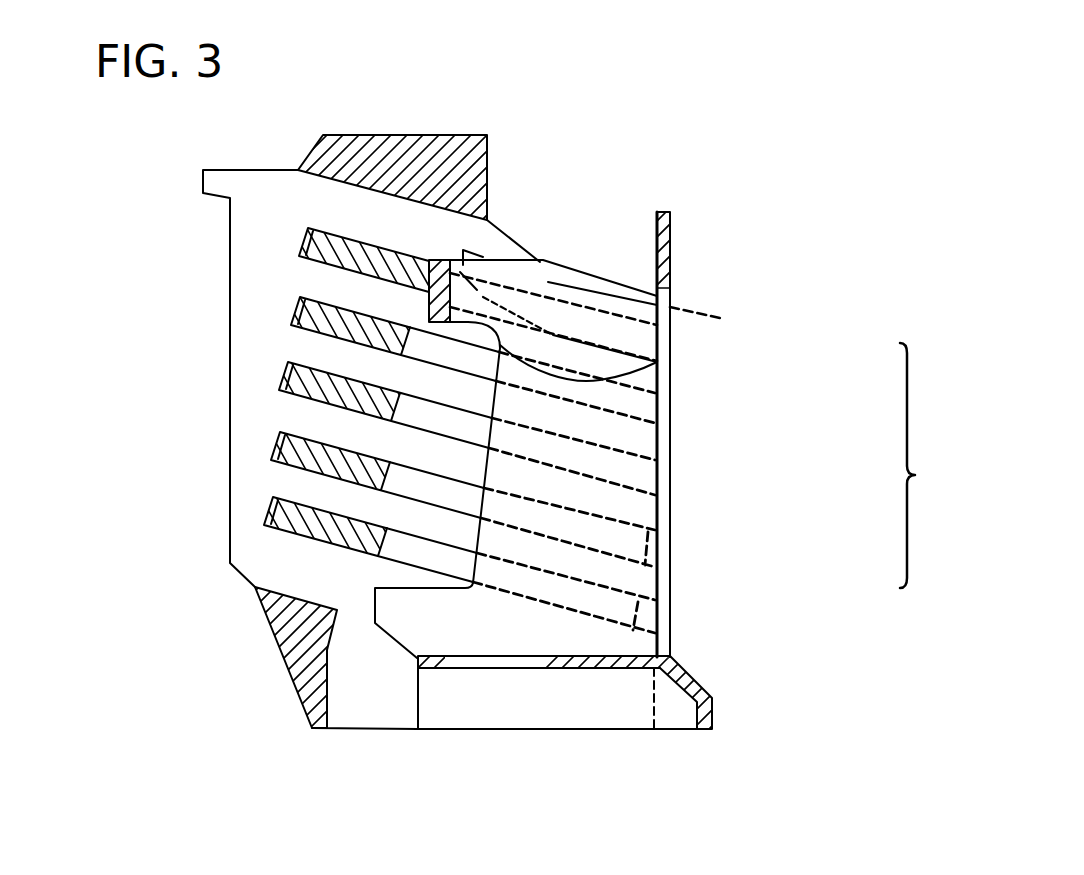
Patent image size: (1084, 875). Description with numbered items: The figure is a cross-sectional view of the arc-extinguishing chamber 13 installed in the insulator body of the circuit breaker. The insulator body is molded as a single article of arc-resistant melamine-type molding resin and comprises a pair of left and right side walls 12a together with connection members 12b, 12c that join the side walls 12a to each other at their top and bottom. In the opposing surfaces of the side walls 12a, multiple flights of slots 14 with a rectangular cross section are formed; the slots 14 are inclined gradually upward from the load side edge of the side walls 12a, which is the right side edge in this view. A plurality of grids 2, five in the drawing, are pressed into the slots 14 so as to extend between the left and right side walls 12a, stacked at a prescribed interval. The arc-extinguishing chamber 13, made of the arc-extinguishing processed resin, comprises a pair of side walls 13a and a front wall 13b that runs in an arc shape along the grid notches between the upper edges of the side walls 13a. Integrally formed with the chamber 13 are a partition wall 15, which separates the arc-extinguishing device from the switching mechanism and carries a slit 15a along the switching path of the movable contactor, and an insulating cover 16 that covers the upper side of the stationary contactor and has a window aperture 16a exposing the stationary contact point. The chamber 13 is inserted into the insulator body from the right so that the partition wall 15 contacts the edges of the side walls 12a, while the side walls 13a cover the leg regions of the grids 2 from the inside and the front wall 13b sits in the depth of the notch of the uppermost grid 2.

The grid 2 is at (320, 334).
The side wall 12a is at (272, 410).
The connection member 12b is at (473, 136).
The connection member 12c is at (303, 653).
The arc-extinguishing chamber 13 is at (933, 465).
The side wall 13a is at (623, 452).
The front wall 13b is at (673, 365).
The slot 14 is at (302, 243).
The partition wall 15 is at (662, 525).
The slit 15a is at (663, 313).
The insulating cover 16 is at (630, 703).
The window aperture 16a is at (490, 665).